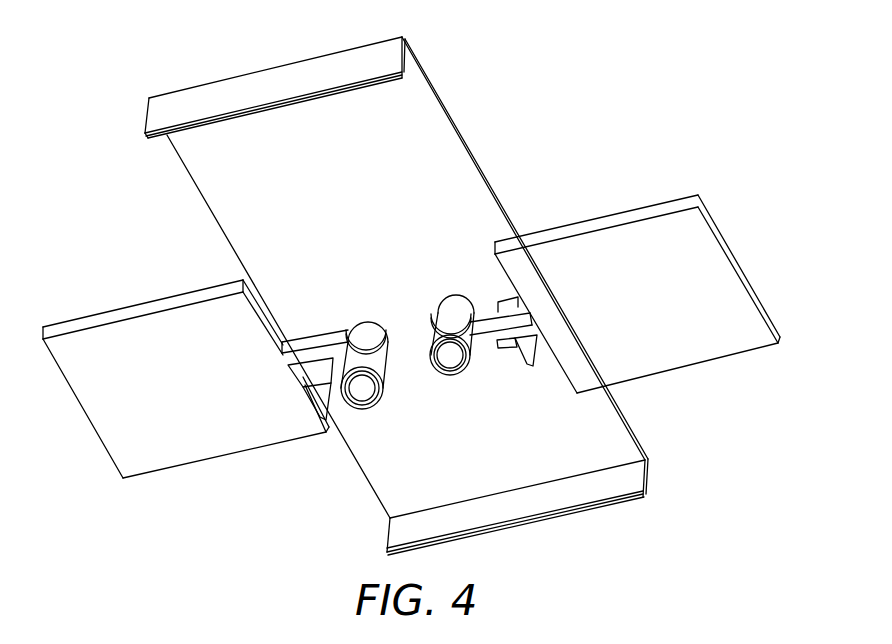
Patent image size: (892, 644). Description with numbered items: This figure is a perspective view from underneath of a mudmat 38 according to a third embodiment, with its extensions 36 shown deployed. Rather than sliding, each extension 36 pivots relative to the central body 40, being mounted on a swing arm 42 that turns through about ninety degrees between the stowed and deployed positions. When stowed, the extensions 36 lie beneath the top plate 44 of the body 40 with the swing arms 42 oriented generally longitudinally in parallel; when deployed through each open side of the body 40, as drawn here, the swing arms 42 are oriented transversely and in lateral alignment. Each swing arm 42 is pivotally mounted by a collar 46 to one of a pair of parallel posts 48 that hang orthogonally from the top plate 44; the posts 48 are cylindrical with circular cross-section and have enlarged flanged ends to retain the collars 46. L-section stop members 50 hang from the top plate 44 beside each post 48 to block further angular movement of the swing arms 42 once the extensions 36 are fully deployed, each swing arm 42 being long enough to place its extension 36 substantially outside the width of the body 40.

The extension 36 is at (208, 450).
The mudmat 38 is at (396, 288).
The central body 40 is at (434, 128).
The swing arm 42 is at (318, 340).
The top plate 44 is at (214, 190).
The collar 46 is at (407, 363).
The post 48 is at (363, 396).
The L-section stop member 50 is at (312, 373).